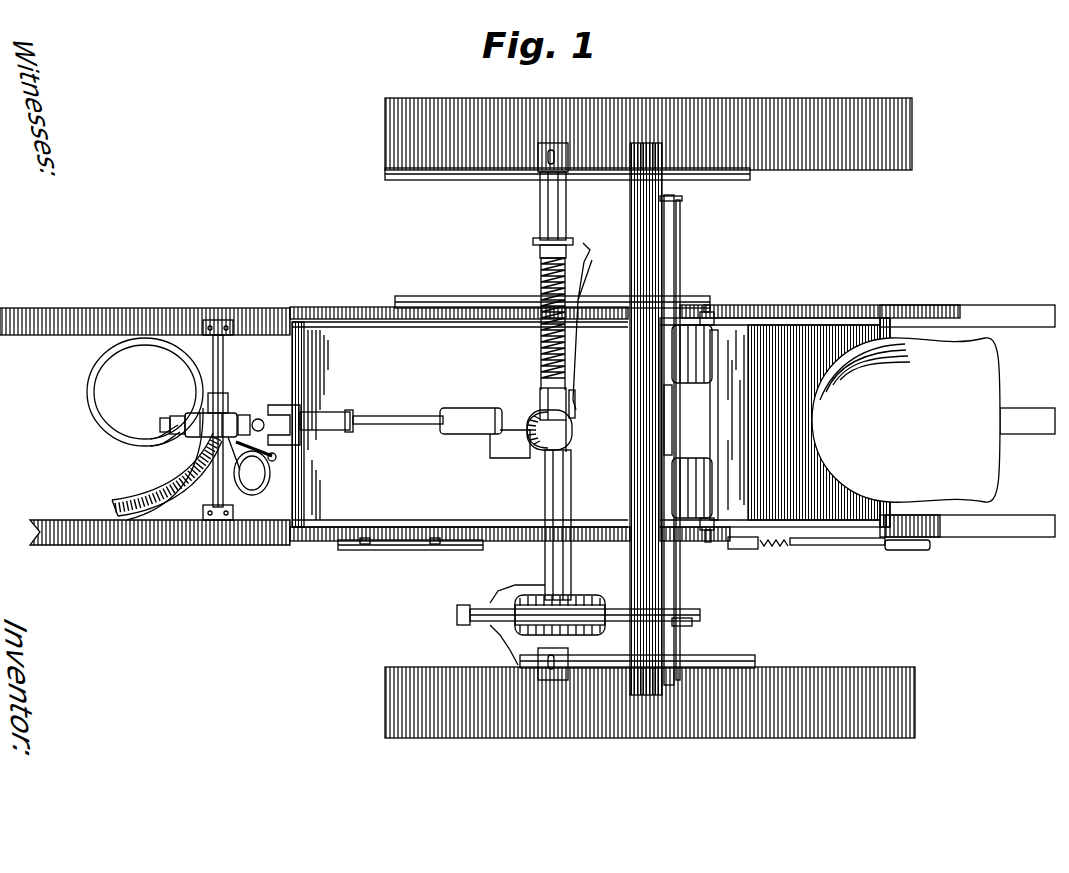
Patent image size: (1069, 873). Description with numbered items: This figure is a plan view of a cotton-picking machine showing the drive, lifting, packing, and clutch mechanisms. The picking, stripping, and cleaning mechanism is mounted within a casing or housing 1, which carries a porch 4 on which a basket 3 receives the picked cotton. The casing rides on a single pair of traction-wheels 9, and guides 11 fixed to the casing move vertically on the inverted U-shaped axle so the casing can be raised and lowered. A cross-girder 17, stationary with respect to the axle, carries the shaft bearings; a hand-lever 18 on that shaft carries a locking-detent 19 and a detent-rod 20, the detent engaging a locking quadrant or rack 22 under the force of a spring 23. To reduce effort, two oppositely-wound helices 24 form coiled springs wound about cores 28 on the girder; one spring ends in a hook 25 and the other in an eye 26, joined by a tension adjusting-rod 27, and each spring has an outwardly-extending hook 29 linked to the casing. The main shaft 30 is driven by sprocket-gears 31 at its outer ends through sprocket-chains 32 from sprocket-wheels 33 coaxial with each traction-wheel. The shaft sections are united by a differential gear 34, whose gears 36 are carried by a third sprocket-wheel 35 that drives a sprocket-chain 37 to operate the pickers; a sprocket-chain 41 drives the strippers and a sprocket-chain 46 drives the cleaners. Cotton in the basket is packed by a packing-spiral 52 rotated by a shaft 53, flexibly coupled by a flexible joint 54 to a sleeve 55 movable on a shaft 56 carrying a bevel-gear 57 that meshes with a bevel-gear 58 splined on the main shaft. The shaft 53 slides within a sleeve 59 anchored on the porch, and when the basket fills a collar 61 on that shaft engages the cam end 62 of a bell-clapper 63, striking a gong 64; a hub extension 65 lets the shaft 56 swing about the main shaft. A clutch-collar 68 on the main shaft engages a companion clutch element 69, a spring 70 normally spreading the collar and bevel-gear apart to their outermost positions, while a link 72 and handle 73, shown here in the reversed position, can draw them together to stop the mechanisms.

The casing or housing 1 is at (630, 575).
The basket 3 is at (112, 505).
The porch 4 is at (37, 336).
The traction-wheels 9 is at (750, 100).
The guides 11 is at (600, 247).
The cross-girder 17 is at (650, 228).
The hand-lever 18 is at (836, 545).
The locking-detent 19 is at (745, 549).
The detent-rod 20 is at (890, 550).
The locking quadrant or rack 22 is at (716, 522).
The spring 23 is at (775, 546).
The helices 24 is at (702, 372).
The hook 25 is at (710, 540).
The eye 26 is at (716, 325).
The tension adjusting-rod 27 is at (718, 414).
The cores 28 is at (668, 385).
The outwardly-extending hook 29 is at (676, 245).
The main shaft 30 is at (548, 566).
The sprocket-gears 31 is at (530, 176).
The sprocket-chains 32 is at (594, 181).
The sprocket-wheels 33 is at (745, 180).
The differential gear 34 is at (602, 580).
The third sprocket-wheel 35 is at (455, 615).
The gears 36 is at (500, 640).
The sprocket-chain 37 is at (505, 590).
The sprocket-chain 41 is at (500, 298).
The sprocket-chain 46 is at (395, 550).
The packing-spiral 52 is at (145, 505).
The shaft 53 is at (145, 392).
The flexible joint 54 is at (285, 405).
The sleeve 55 is at (338, 412).
The shaft 56 is at (441, 424).
The bevel-gear 57 is at (527, 412).
The bevel-gear 58 is at (545, 400).
The sleeve 59 is at (195, 430).
The collar 61 is at (224, 450).
The cam end 62 is at (252, 414).
The bell-clapper 63 is at (278, 458).
The gong 64 is at (255, 496).
The hub extension 65 is at (572, 460).
The clutch-collar 68 is at (536, 244).
The companion clutch element 69 is at (546, 205).
The spring 70 is at (542, 290).
The link 72 is at (574, 365).
The handle 73 is at (582, 282).